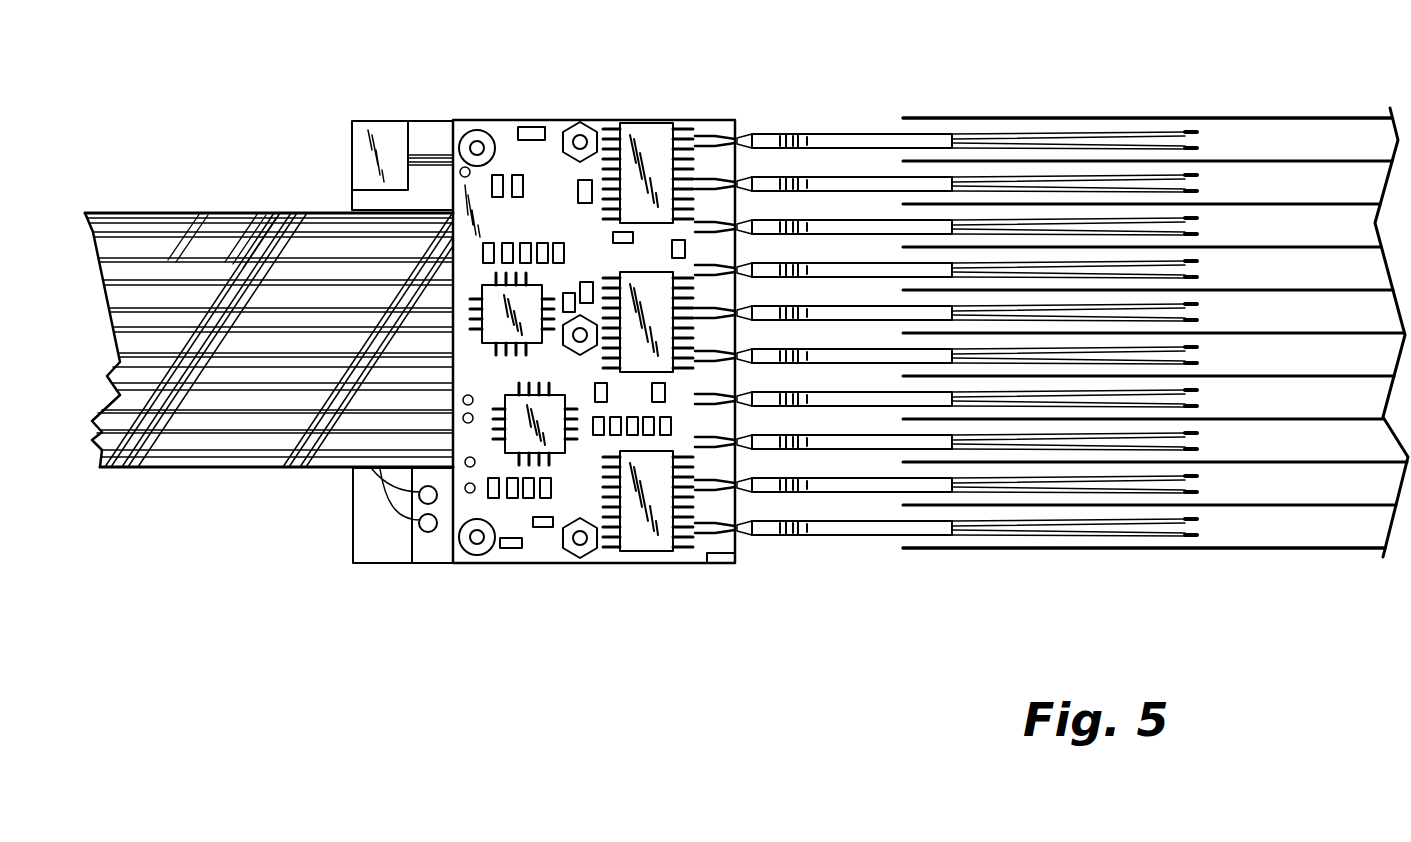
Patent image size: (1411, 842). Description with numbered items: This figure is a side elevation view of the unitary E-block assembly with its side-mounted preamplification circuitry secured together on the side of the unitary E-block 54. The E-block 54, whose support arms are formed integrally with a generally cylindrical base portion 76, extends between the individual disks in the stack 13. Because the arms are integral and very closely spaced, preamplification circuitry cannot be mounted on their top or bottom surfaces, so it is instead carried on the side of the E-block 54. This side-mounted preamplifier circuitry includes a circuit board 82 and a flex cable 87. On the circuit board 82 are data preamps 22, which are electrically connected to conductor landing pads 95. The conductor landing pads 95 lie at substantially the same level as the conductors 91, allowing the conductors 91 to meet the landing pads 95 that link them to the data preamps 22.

The stack 13 is at (1288, 102).
The data preamps 22 is at (657, 125).
The unitary E-block 54 is at (838, 126).
The base portion 76 is at (418, 120).
The circuit board 82 is at (540, 570).
The flex cable 87 is at (214, 213).
The conductors 91 is at (748, 549).
The conductor landing pads 95 is at (707, 566).